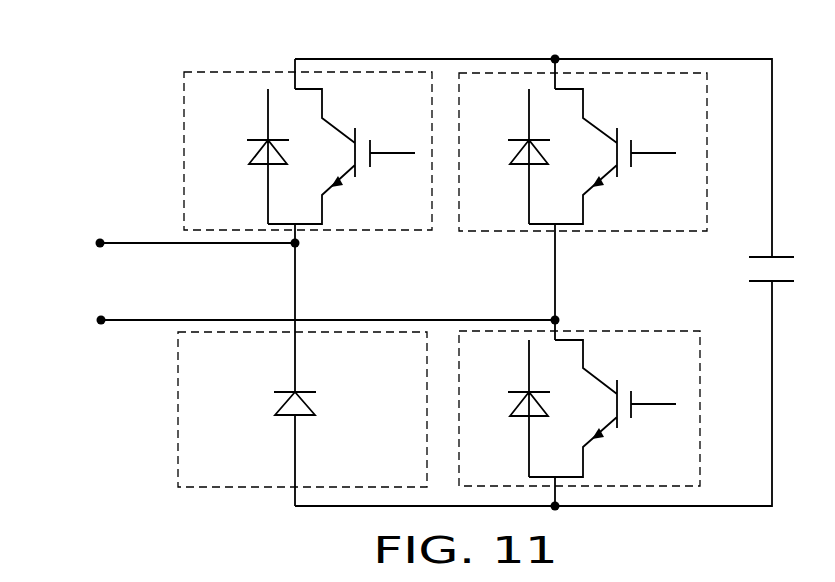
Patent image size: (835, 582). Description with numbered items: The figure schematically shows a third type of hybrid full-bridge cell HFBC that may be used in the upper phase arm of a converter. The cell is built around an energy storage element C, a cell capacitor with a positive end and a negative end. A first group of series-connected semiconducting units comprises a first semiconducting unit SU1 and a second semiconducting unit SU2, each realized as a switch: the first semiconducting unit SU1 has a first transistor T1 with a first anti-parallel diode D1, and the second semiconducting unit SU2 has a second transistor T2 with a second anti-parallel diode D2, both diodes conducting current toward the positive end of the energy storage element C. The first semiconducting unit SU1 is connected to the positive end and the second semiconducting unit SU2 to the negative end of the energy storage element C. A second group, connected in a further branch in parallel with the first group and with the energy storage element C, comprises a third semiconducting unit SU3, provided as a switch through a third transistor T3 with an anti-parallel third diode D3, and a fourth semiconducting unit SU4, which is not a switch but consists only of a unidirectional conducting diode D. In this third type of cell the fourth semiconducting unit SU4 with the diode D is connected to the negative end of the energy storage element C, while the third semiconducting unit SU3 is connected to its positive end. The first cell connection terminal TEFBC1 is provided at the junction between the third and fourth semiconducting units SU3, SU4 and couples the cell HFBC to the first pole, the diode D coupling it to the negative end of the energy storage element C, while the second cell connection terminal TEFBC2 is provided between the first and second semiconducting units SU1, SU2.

The hybrid full-bridge cell HFBC is at (150, 98).
The first cell connection terminal TEFBC1 is at (150, 224).
The second cell connection terminal TEFBC2 is at (280, 302).
The energy storage element C is at (754, 265).
The first semiconducting unit SU1 is at (522, 233).
The second semiconducting unit SU2 is at (612, 327).
The third semiconducting unit SU3 is at (388, 228).
The fourth semiconducting unit SU4 is at (232, 487).
The first anti-parallel diode D1 is at (530, 156).
The first transistor T1 is at (615, 156).
The second anti-parallel diode D2 is at (525, 408).
The second transistor T2 is at (615, 408).
The third diode D3 is at (265, 156).
The third transistor T3 is at (355, 156).
The diode D is at (272, 389).